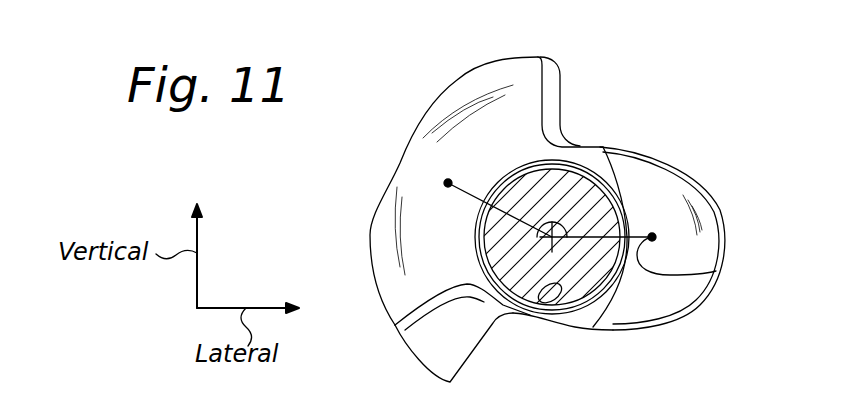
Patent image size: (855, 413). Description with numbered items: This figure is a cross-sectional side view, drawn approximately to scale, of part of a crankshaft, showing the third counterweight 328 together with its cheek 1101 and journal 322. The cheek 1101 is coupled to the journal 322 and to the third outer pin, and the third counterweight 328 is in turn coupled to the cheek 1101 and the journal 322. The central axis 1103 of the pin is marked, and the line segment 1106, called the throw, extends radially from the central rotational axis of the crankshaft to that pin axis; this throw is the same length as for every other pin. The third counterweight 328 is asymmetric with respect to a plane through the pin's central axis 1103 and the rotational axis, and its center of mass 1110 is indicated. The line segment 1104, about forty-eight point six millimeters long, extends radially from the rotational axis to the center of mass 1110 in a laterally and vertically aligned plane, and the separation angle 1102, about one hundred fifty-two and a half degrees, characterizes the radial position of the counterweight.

The third counterweight 328 is at (484, 80).
The center of mass of the third counterweight 1110 is at (448, 183).
The line segment 1104 is at (467, 198).
The cheek 1101 is at (660, 297).
The separation angle 1102 is at (553, 222).
The central axis of pin 1103 is at (652, 237).
The line segment 1106 is at (716, 271).
The journal 322 is at (570, 293).